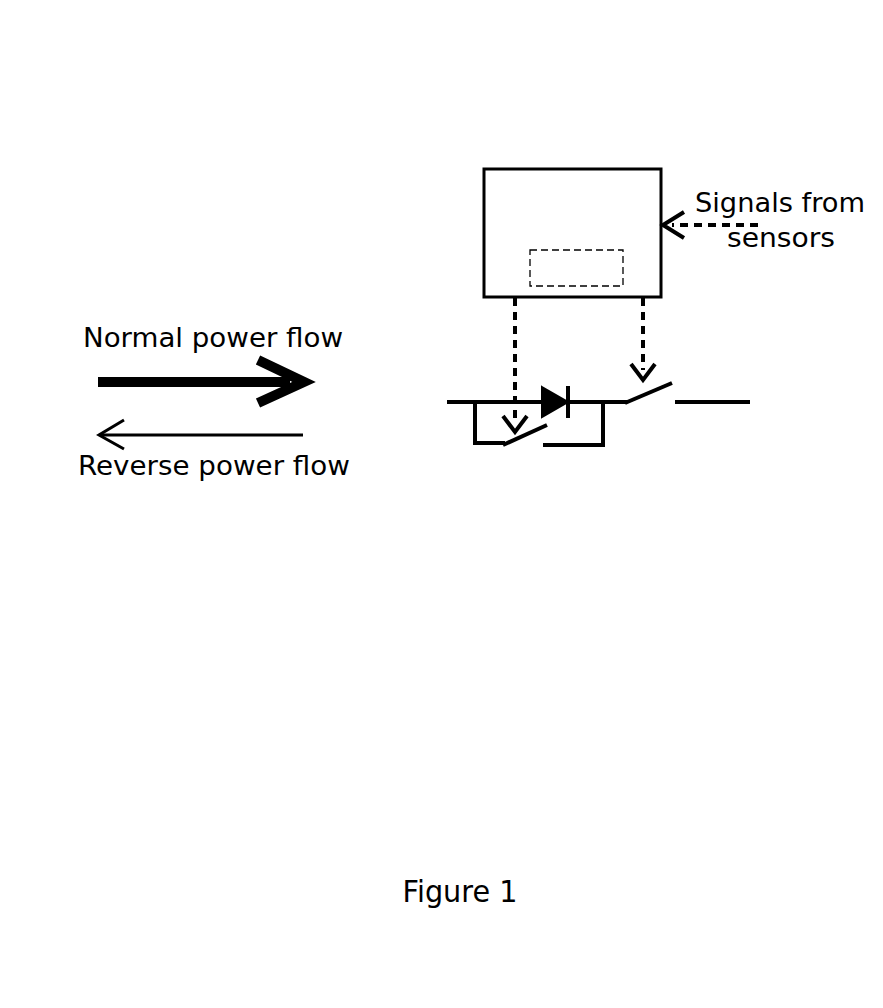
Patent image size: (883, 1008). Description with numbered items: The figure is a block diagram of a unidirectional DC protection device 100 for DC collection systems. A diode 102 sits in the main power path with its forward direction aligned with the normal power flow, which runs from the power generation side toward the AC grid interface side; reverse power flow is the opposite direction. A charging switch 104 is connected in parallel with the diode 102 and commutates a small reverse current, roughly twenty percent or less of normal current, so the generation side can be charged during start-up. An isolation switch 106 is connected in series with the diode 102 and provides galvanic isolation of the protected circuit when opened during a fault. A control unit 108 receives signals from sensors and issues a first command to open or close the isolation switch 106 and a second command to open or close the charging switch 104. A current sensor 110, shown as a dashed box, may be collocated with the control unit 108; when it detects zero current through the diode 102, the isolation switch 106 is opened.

The unidirectional DC protection device 100 is at (397, 112).
The diode 102 is at (565, 365).
The charging switch 104 is at (520, 470).
The isolation switch 106 is at (661, 428).
The control unit 108 is at (560, 201).
The current sensor 110 is at (560, 279).